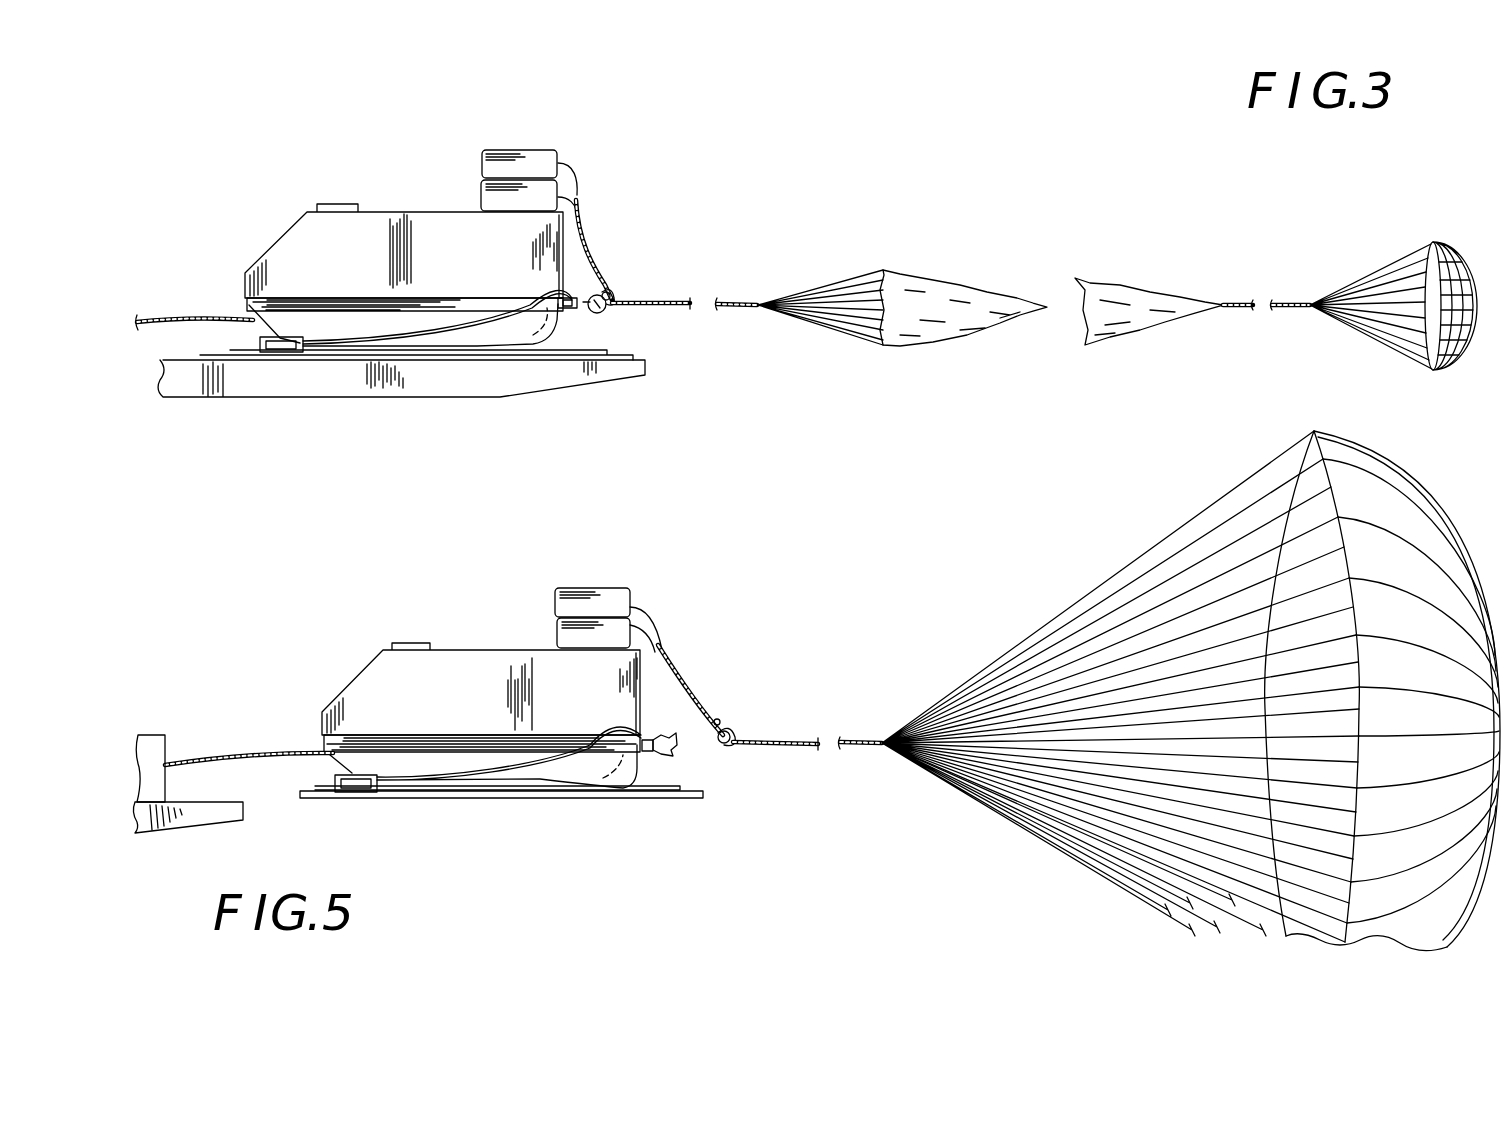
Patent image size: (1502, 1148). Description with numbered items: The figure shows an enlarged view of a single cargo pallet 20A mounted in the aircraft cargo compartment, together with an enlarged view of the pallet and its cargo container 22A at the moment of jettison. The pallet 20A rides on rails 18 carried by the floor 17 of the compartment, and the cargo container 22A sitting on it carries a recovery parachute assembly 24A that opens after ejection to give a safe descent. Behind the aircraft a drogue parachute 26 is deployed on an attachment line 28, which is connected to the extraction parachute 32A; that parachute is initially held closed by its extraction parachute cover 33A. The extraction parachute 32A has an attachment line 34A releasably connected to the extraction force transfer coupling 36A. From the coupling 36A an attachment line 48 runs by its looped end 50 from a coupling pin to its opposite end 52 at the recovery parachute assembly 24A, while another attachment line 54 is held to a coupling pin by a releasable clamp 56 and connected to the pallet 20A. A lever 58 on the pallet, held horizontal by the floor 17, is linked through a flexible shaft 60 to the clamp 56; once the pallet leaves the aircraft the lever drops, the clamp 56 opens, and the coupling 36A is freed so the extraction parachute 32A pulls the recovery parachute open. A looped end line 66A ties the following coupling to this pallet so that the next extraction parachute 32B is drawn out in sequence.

In FIG. 5, the floor 17 is at (687, 800).
In FIG. 5, the rails 18 is at (657, 782).
In FIG. 3, the cargo pallet 20A is at (247, 305).
In FIG. 5, the cargo pallet 20A is at (333, 758).
In FIG. 3, the cargo container 22A is at (278, 242).
In FIG. 5, the cargo container 22A is at (360, 673).
In FIG. 3, the recovery parachute assembly 24A is at (500, 150).
In FIG. 5, the recovery parachute assembly 24A is at (567, 590).
In FIG. 3, the drogue parachute 26 is at (1455, 250).
In FIG. 3, the attachment line 28 is at (1288, 302).
In FIG. 3, the extraction parachute 32A is at (957, 283).
In FIG. 5, the extraction parachute 32A is at (1394, 453).
In FIG. 5, the extraction parachute 32B is at (158, 735).
In FIG. 3, the extraction parachute cover 33A is at (1148, 290).
In FIG. 3, the attachment line 34A is at (663, 300).
In FIG. 5, the attachment line 34A is at (790, 738).
In FIG. 3, the extraction force transfer coupling 36A is at (612, 292).
In FIG. 5, the extraction force transfer coupling 36A is at (731, 733).
In FIG. 3, the attachment line 48 is at (573, 237).
In FIG. 5, the attachment line 48 is at (677, 670).
In FIG. 5, the looped end 50 is at (717, 712).
In FIG. 5, the opposite end 52 is at (638, 610).
In FIG. 3, the attachment line 54 is at (570, 309).
In FIG. 5, the attachment line 54 is at (636, 750).
In FIG. 3, the releasable clamp 56 is at (590, 315).
In FIG. 5, the releasable clamp 56 is at (677, 748).
In FIG. 3, the lever 58 is at (260, 347).
In FIG. 5, the lever 58 is at (365, 792).
In FIG. 3, the flexible shaft 60 is at (477, 332).
In FIG. 5, the flexible shaft 60 is at (540, 770).
In FIG. 3, the looped end line 66A is at (172, 324).
In FIG. 5, the looped end line 66A is at (250, 760).